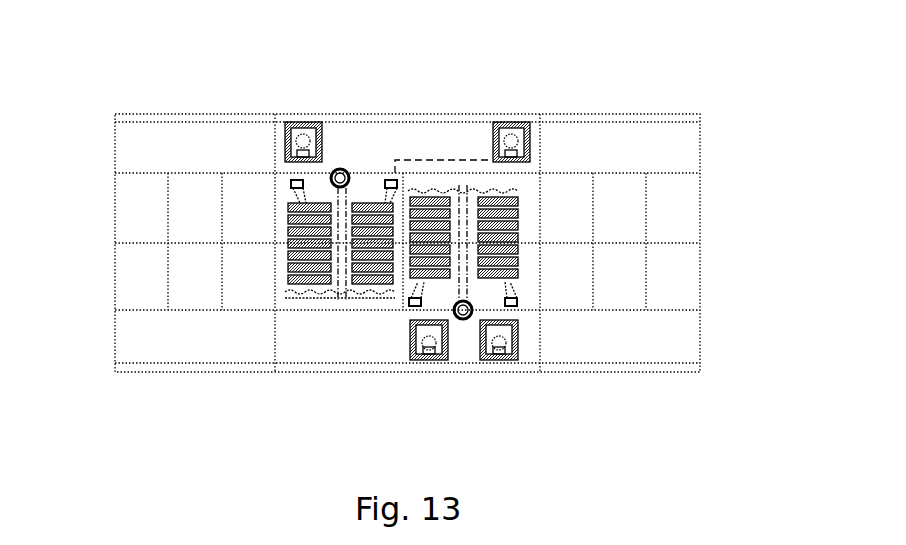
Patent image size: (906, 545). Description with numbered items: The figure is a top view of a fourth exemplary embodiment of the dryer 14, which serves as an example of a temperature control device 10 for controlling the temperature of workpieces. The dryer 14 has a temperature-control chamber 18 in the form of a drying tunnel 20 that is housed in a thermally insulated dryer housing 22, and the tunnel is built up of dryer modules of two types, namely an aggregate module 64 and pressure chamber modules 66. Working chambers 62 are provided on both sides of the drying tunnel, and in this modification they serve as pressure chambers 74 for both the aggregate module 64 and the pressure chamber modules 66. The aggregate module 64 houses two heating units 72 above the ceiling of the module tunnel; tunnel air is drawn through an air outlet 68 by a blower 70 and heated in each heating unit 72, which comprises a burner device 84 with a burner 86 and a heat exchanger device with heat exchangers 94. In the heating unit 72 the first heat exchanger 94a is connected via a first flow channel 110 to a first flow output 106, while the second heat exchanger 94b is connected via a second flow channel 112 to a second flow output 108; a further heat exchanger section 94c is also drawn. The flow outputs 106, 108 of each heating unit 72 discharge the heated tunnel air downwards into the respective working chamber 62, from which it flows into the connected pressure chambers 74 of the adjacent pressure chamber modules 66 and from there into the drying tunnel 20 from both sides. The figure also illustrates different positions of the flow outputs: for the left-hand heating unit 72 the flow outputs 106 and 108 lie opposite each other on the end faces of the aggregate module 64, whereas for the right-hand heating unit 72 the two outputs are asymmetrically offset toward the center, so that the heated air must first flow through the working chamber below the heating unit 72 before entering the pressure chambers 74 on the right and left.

The temperature control device 10 is at (671, 52).
The dryer 14 is at (693, 80).
The temperature-control chamber 18 is at (681, 195).
The drying tunnel 20 is at (688, 229).
The dryer housing 22 is at (136, 114).
The working chamber 62 is at (353, 126).
The aggregate module 64 is at (410, 110).
The pressure chamber module 66 is at (177, 111).
The air outlet 68 is at (416, 160).
The blower 70 is at (303, 134).
The heating unit 72 is at (526, 190).
The pressure chamber 74 is at (142, 150).
The burner device 84 is at (356, 150).
The burner 86 is at (340, 168).
The heat exchanger 94 is at (406, 243).
The first heat exchanger 94a is at (426, 205).
The second heat exchanger 94b is at (296, 226).
The lower core section 94c is at (373, 292).
The first flow output 106 is at (284, 140).
The second flow output 108 is at (533, 148).
The first flow channel 110 is at (292, 165).
The second flow channel 112 is at (484, 128).